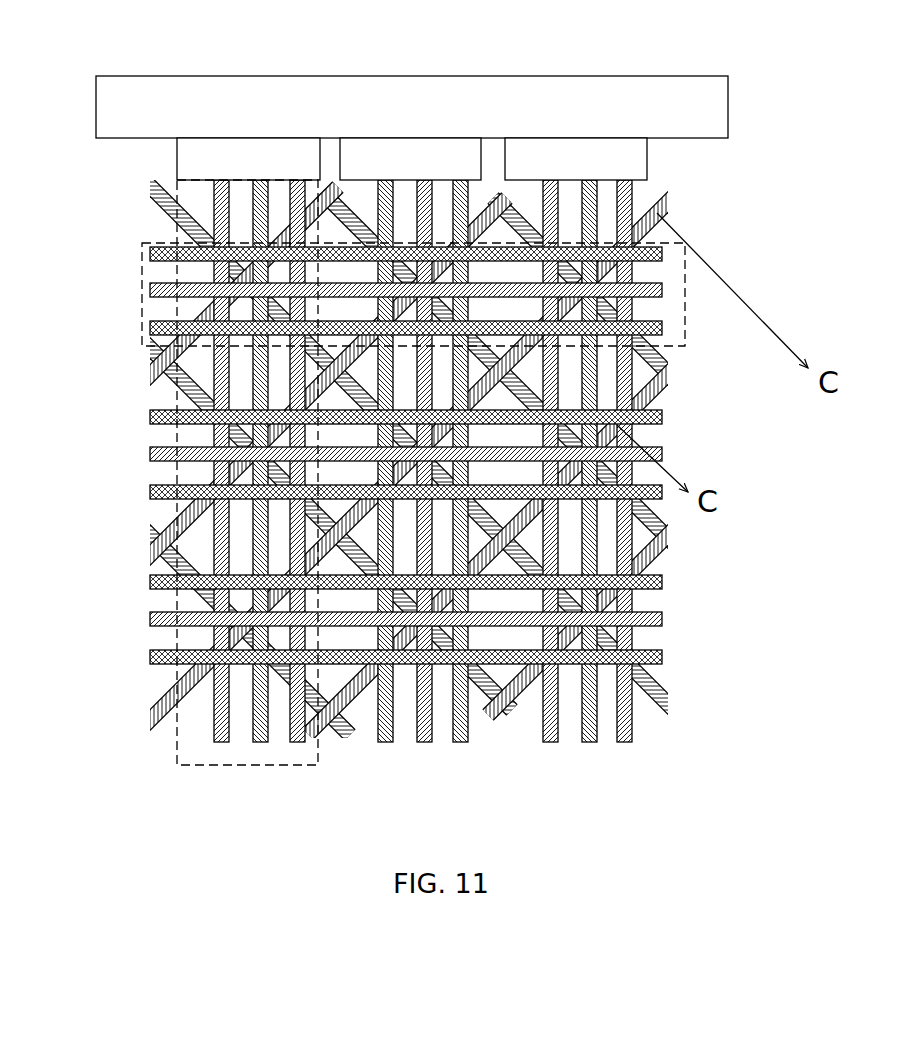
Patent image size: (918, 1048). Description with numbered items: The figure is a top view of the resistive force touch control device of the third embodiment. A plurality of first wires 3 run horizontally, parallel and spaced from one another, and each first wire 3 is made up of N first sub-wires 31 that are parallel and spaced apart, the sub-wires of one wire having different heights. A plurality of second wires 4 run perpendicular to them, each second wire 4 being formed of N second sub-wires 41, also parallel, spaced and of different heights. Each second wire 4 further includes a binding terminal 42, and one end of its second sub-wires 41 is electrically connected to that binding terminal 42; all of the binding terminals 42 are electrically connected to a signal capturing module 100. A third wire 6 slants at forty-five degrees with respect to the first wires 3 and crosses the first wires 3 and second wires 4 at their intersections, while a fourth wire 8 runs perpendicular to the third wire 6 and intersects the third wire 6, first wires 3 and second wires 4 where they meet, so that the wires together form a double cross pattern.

The signal capturing module 100 is at (530, 97).
The binding terminal 42 is at (271, 156).
The first sub-wire 31 is at (150, 253).
The first wire 3 is at (142, 300).
The second sub-wire 41 is at (252, 392).
The second wire 4 is at (255, 766).
The third wire 6 is at (150, 553).
The fourth wire 8 is at (665, 555).